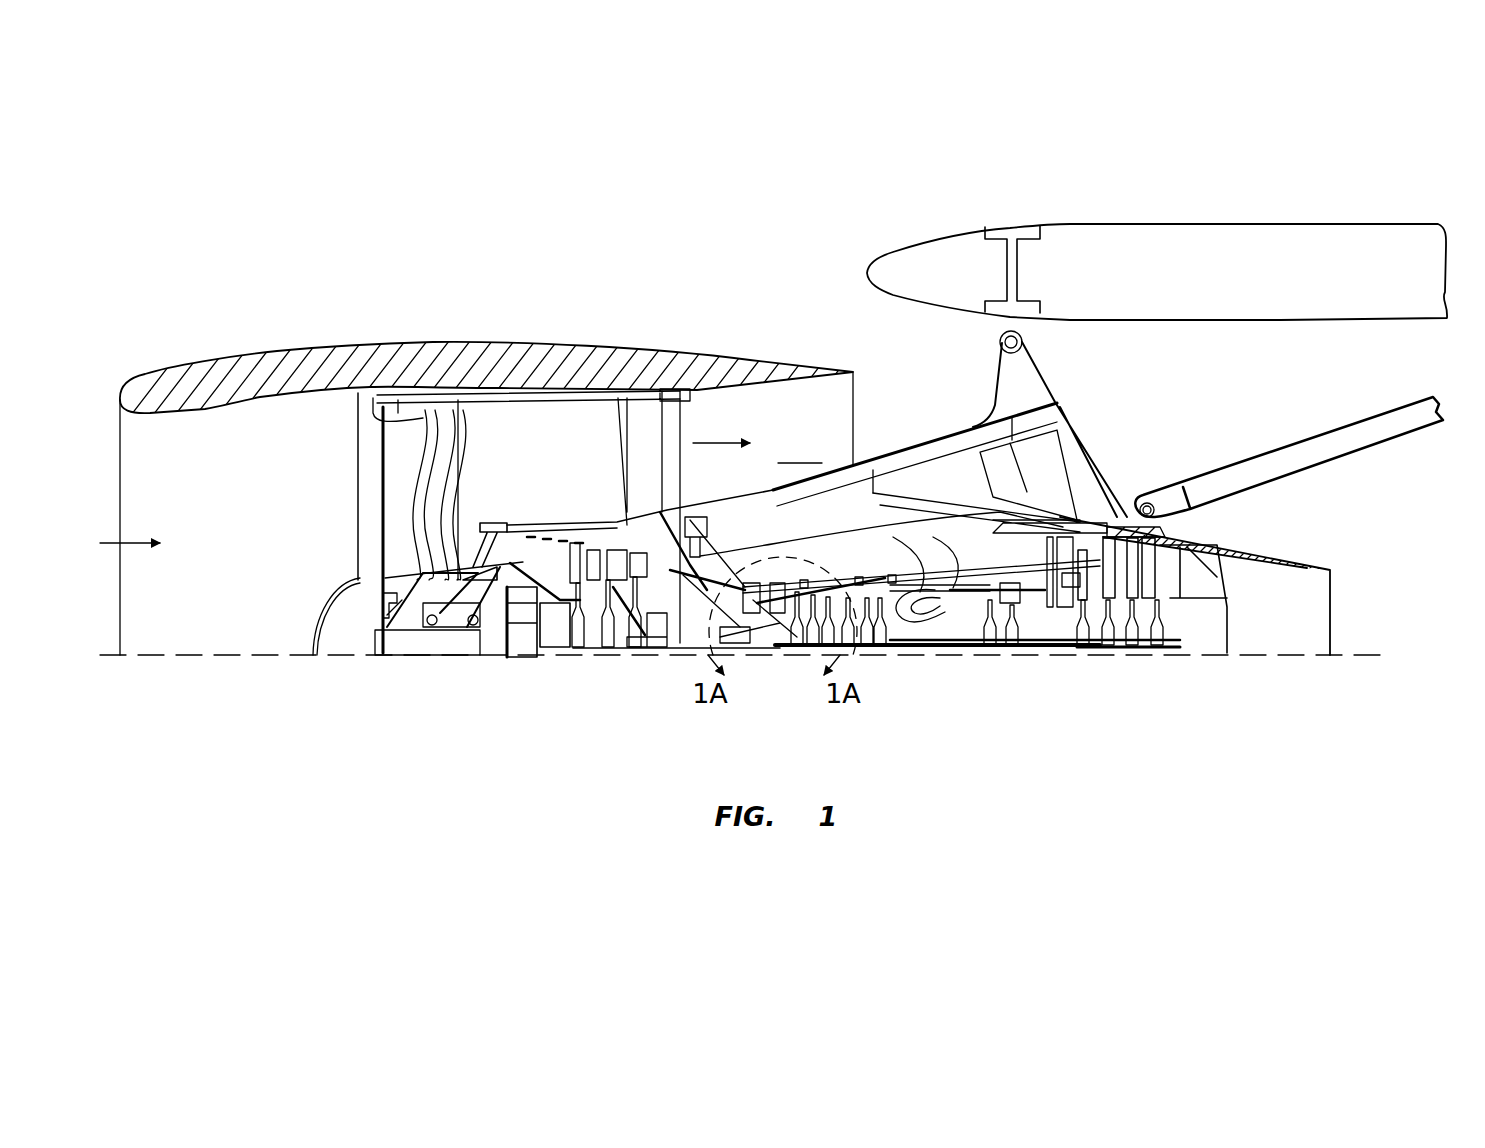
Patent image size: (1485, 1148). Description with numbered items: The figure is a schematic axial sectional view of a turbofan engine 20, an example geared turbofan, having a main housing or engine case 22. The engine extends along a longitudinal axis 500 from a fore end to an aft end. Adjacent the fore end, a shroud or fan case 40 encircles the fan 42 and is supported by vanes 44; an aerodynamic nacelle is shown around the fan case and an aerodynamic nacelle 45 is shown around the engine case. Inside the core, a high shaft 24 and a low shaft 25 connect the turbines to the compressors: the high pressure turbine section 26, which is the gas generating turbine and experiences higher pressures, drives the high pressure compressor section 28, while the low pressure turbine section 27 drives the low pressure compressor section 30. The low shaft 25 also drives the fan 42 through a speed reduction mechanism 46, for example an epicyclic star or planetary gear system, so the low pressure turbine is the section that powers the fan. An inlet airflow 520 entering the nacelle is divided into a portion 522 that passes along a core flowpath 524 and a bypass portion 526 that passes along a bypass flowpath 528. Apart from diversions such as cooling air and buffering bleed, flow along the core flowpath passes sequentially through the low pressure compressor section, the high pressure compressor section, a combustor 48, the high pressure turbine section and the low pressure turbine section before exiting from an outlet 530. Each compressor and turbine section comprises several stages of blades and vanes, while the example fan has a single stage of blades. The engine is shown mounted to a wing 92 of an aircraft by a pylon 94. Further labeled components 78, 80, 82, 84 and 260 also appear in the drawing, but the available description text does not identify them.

The turbofan engine 20 is at (305, 240).
The main housing (engine case) 22 is at (874, 567).
The high shaft 24 is at (941, 653).
The low shaft 25 is at (767, 653).
The high pressure turbine section 26 is at (1015, 653).
The low pressure turbine section 27 is at (1106, 590).
The high pressure compressor section 28 is at (806, 565).
The low pressure compressor section 30 is at (643, 544).
The shroud (fan case) 40 is at (484, 428).
The fan 42 is at (352, 569).
The vanes 44 is at (645, 418).
The nacelle 45 is at (236, 377).
The speed reduction mechanism 46 is at (520, 667).
The combustor 48 is at (945, 588).
The fan hub 78 is at (403, 580).
The fan exit guide vanes 80 is at (424, 408).
The fan case 82 is at (381, 396).
The inlet duct 84 is at (224, 410).
The wing 92 is at (1237, 289).
The pylon 94 is at (1385, 465).
The translating sleeve 260 is at (542, 390).
The longitudinal axis 500 is at (178, 665).
The inlet airflow 520 is at (133, 537).
The portion 522 is at (468, 541).
The core flowpath 524 is at (763, 558).
The bypass portion 526 is at (713, 443).
The bypass flowpath 528 is at (800, 447).
The outlet 530 is at (1348, 594).